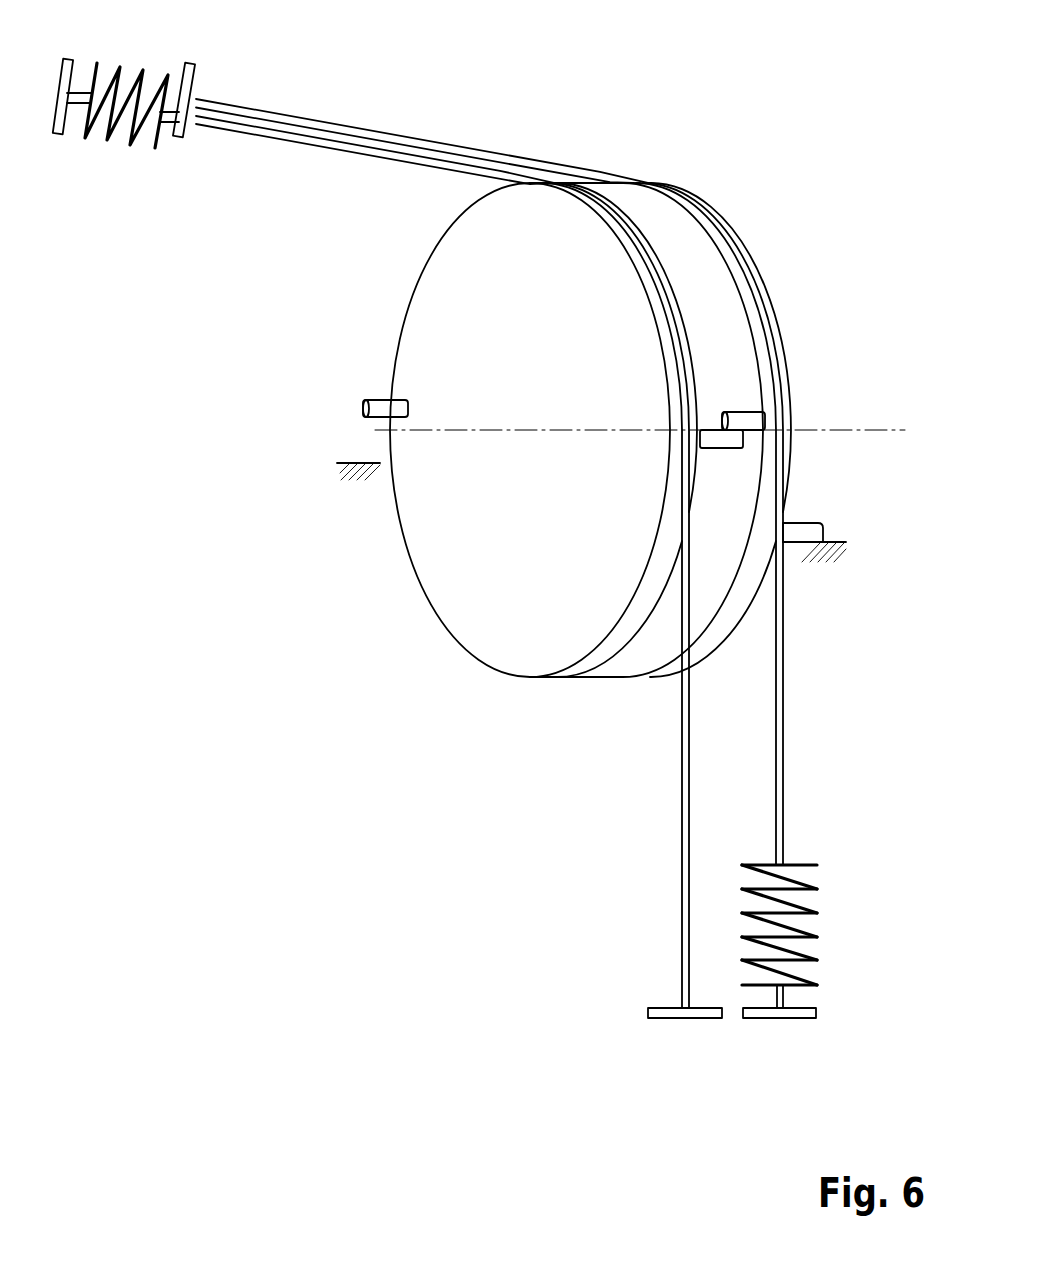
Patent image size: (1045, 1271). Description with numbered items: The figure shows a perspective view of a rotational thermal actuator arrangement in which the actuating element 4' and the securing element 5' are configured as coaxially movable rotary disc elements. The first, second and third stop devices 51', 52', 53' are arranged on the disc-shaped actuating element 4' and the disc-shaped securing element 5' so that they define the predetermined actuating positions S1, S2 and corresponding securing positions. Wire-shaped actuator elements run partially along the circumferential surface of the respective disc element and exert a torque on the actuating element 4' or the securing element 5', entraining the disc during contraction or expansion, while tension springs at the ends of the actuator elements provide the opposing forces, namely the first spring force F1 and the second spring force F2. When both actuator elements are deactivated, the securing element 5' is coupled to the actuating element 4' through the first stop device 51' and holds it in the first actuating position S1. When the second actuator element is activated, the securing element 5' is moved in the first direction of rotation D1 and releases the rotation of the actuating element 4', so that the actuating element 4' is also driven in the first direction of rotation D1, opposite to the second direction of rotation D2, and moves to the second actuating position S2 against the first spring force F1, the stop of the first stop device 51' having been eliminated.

The actuating element 4' is at (508, 430).
The securing element 5' is at (735, 430).
The first stop device 51' is at (774, 395).
The second stop device 52' is at (853, 517).
The third stop device 53' is at (336, 430).
The first spring force F1 is at (152, 170).
The second spring force F2 is at (837, 900).
The first direction of rotation D1 is at (822, 245).
The second direction of rotation D2 is at (805, 247).
The first actuating position S1 is at (532, 430).
The second actuating position S2 is at (512, 373).